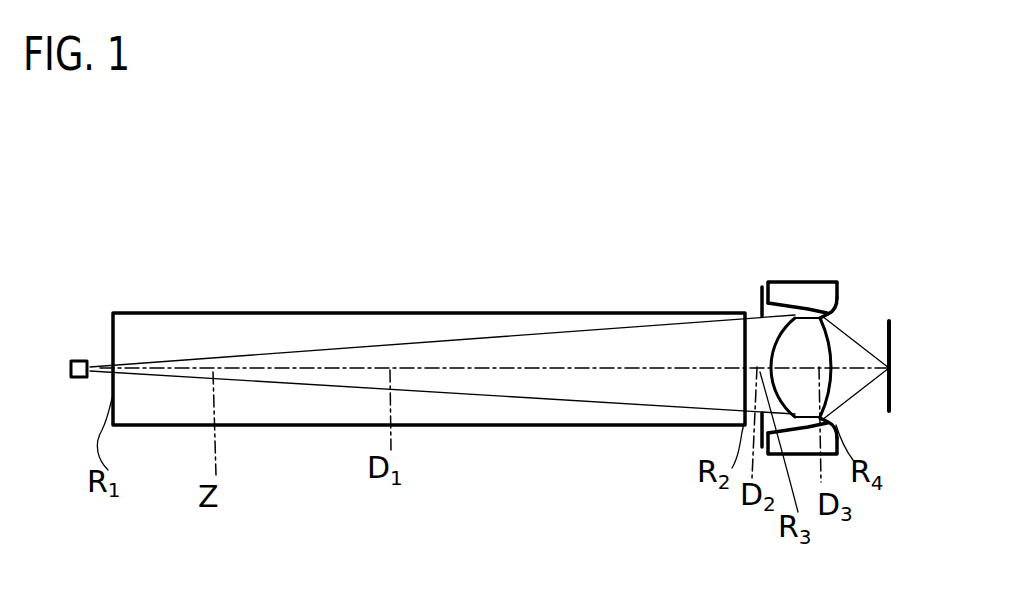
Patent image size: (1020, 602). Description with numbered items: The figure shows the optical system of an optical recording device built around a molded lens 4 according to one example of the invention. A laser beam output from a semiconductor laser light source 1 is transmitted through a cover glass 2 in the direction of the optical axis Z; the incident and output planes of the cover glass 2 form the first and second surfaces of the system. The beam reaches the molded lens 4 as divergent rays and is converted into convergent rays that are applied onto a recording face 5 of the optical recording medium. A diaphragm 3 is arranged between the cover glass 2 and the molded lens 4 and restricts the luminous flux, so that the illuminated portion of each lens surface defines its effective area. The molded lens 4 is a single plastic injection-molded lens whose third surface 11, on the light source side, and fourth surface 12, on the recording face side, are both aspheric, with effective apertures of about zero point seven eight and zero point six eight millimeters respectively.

The semiconductor laser light source 1 is at (78, 360).
The cover glass 2 is at (227, 312).
The diaphragm 3 is at (757, 289).
The molded lens 4 is at (790, 281).
The recording face 5 is at (888, 321).
The third surface 11 is at (770, 345).
The fourth surface 12 is at (830, 332).